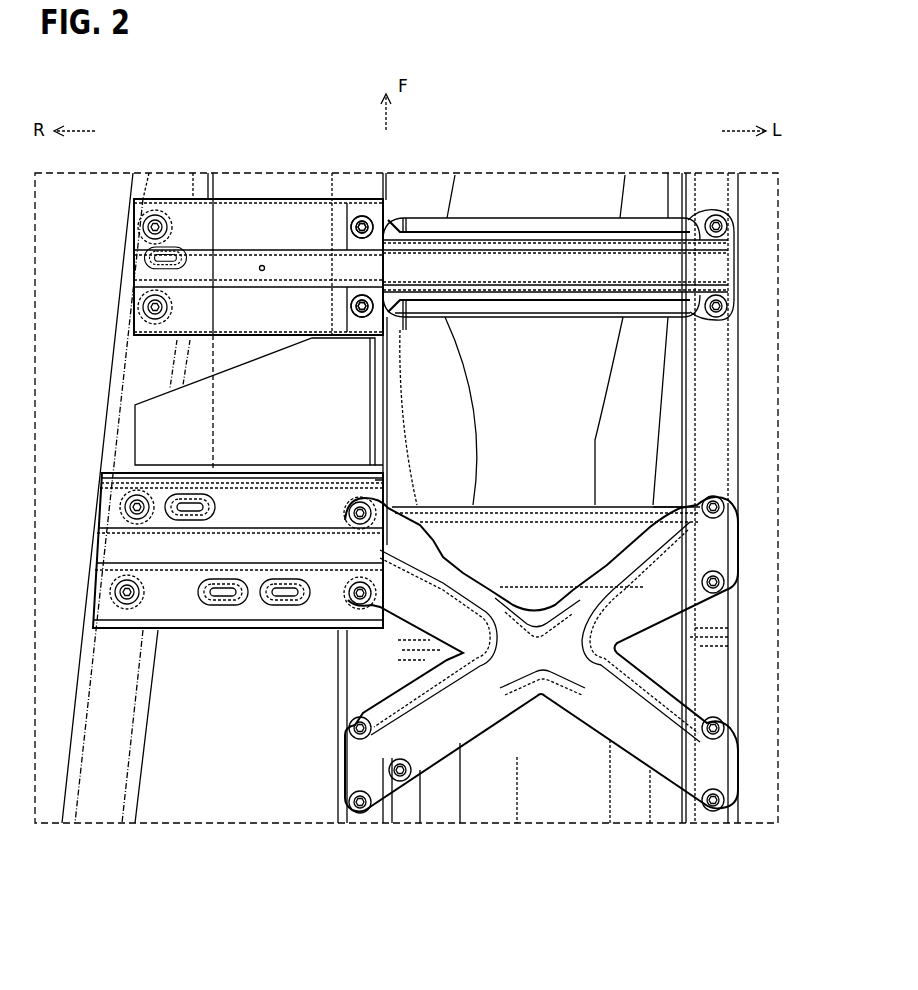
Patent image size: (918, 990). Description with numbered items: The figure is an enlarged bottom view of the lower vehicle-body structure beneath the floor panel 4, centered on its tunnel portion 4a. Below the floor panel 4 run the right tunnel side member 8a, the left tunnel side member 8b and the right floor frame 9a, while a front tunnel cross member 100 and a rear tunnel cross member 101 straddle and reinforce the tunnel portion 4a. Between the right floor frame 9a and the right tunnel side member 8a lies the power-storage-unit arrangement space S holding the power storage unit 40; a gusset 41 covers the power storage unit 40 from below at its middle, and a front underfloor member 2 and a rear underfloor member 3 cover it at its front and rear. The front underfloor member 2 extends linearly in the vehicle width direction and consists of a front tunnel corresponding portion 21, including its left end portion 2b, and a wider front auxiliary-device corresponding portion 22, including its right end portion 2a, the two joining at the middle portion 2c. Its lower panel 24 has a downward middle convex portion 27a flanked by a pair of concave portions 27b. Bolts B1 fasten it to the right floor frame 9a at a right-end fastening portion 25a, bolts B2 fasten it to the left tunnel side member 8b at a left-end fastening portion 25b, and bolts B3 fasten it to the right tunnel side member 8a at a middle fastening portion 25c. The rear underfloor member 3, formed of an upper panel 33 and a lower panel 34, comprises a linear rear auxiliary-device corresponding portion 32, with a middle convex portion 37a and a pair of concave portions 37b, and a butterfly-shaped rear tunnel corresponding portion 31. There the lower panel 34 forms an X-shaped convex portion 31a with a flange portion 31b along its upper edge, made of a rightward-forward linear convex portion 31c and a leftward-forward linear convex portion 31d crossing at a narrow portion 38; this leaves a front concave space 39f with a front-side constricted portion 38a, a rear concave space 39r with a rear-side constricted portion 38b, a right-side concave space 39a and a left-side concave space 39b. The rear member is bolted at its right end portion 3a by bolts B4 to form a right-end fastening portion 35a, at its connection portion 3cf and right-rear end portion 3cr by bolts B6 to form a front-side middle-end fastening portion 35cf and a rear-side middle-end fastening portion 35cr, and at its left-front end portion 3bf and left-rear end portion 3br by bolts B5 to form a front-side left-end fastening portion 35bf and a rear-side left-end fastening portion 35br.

The front underfloor member 2 is at (584, 225).
The right end portion 2a is at (157, 192).
The left end portion 2b is at (714, 207).
The middle portion 2c is at (378, 190).
The rear underfloor member 3 is at (203, 635).
The right end portion 3a is at (118, 637).
The left-front end portion 3bf is at (725, 483).
The left-rear end portion 3br is at (700, 818).
The connection portion 3cf is at (358, 468).
The right-rear end portion 3cr is at (332, 722).
The floor panel 4 is at (758, 392).
The tunnel portion 4a is at (540, 414).
The right tunnel side member 8a is at (389, 405).
The left tunnel side member 8b is at (682, 407).
The right floor frame 9a is at (150, 730).
The front tunnel corresponding portion 21 is at (482, 306).
The front auxiliary-device corresponding portion 22 is at (258, 195).
The lower panel 24 is at (480, 236).
The right-end fastening portion 25a is at (138, 303).
The left-end fastening portion 25b is at (742, 305).
The middle fastening portion 25c is at (348, 226).
The middle convex portion 27a is at (193, 281).
The concave portions 27b is at (260, 238).
The rear tunnel corresponding portion 31 is at (578, 725).
The X-shaped convex portion 31a is at (645, 685).
The flange portion 31b is at (692, 708).
The rightward-forward linear convex portion 31c is at (432, 572).
The leftward-forward linear convex portion 31d is at (640, 568).
The rear auxiliary-device corresponding portion 32 is at (268, 634).
The upper panel 33 is at (730, 661).
The lower panel 34 is at (700, 503).
The right-end fastening portion 35a is at (76, 528).
The front-side left-end fastening portion 35bf is at (742, 580).
The rear-side left-end fastening portion 35br is at (742, 803).
The front-side middle-end fastening portion 35cf is at (345, 514).
The rear-side middle-end fastening portion 35cr is at (336, 790).
The middle convex portion 37a is at (200, 557).
The concave portions 37b is at (254, 522).
The narrow portion 38 is at (540, 660).
The front-side constricted portion 38a is at (572, 600).
The rear-side constricted portion 38b is at (550, 698).
The right-side concave space 39a is at (426, 662).
The left-side concave space 39b is at (664, 662).
The front concave space 39f is at (530, 570).
The rear concave space 39r is at (505, 768).
The power storage unit 40 is at (212, 360).
The gusset 41 is at (272, 422).
The front tunnel cross member 100 is at (530, 316).
The rear tunnel cross member 101 is at (515, 505).
The bolts B1 is at (150, 227).
The bolts B2 is at (726, 222).
The bolts B3 is at (360, 220).
The bolts B4 is at (138, 515).
The bolts B5 is at (722, 502).
The bolts B6 is at (364, 506).
The power-storage-unit arrangement space S is at (196, 346).